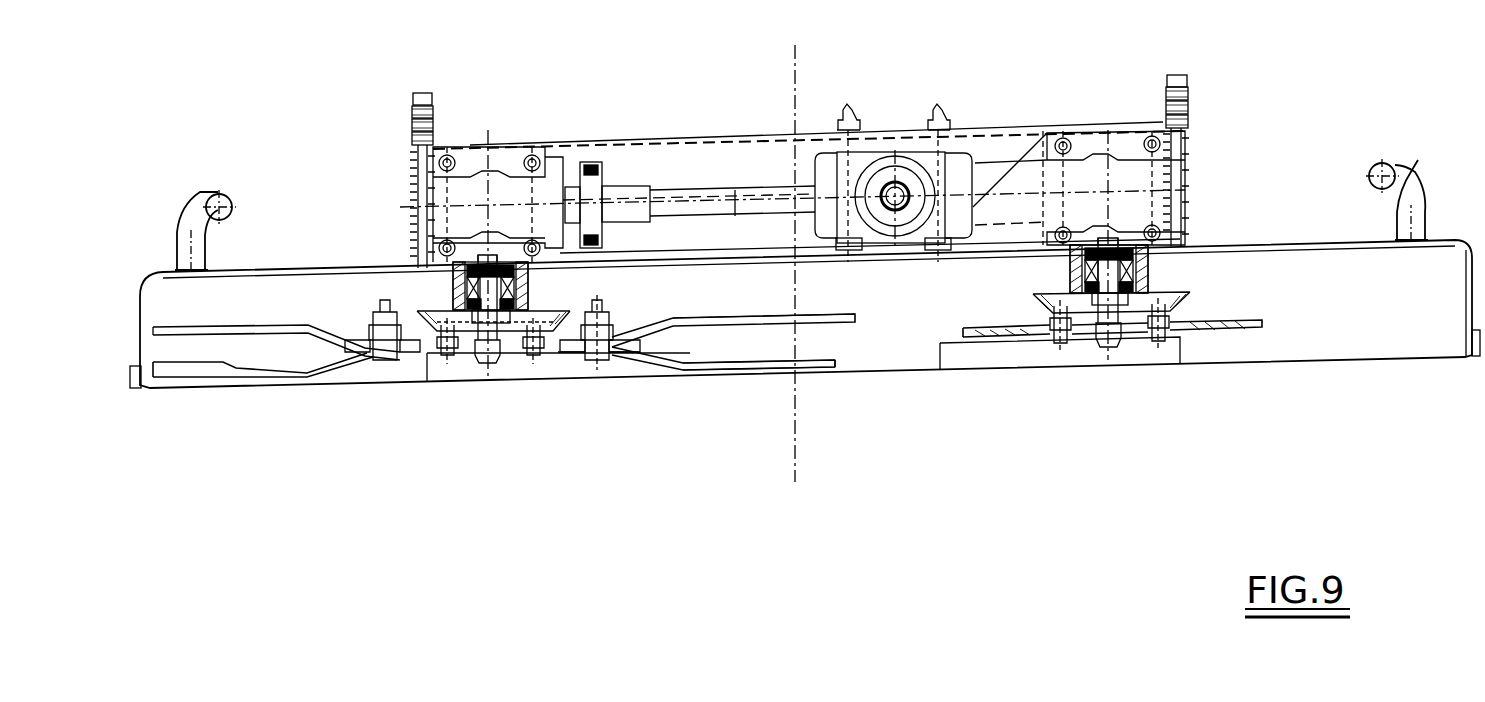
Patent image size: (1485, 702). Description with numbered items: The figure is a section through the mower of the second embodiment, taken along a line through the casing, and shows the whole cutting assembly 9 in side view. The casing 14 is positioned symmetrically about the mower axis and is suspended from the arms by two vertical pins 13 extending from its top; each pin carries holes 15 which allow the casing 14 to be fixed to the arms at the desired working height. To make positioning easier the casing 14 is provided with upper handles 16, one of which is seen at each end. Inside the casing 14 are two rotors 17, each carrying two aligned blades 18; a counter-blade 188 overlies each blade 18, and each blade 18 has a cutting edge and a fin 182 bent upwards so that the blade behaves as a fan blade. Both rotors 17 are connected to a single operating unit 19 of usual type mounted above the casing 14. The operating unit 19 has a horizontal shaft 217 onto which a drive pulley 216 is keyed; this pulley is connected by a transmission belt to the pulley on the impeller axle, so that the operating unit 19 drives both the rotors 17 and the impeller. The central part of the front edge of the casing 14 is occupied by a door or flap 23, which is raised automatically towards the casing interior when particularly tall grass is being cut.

The cutting deck assembly 9 is at (633, 393).
The vertical pins 13 is at (412, 92).
The casing 14 is at (292, 270).
The holes 15 is at (410, 112).
The upper handles 16 is at (195, 198).
The rotors 17 is at (1142, 335).
The blades 18 is at (693, 366).
The operating unit 19 is at (862, 156).
The door or flap 23 is at (918, 362).
The fin 182 is at (183, 376).
The counter-blade 188 is at (720, 322).
The drive pulley 216 is at (592, 185).
The horizontal shaft 217 is at (680, 192).